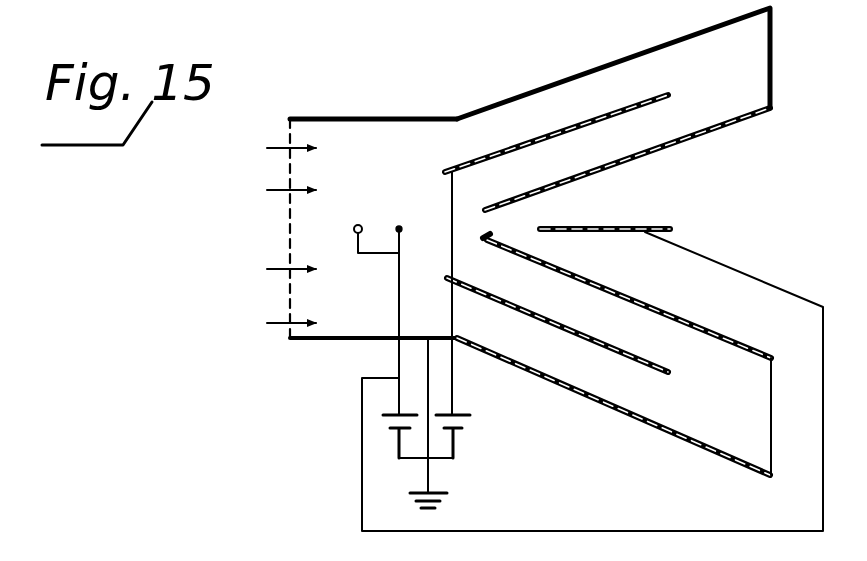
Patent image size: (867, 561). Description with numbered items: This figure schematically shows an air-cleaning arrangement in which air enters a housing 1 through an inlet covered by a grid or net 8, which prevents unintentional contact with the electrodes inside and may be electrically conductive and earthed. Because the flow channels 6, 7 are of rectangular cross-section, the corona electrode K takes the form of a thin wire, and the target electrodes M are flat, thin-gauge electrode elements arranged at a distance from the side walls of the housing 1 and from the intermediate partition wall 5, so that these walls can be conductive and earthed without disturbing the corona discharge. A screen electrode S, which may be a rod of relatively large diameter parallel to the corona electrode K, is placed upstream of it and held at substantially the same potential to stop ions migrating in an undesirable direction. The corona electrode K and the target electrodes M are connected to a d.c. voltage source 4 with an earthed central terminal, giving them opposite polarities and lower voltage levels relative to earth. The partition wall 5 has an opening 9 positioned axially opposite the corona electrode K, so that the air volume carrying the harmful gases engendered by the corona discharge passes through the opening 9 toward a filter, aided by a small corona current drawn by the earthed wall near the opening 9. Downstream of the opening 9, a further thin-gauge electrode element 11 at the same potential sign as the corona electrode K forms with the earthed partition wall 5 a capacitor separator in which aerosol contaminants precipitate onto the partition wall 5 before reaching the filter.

The housing 1 is at (443, 117).
The d.c. voltage source 4 is at (383, 420).
The partition wall 5 is at (656, 152).
The flow channel 6 is at (645, 75).
The flow channel 7 is at (622, 402).
The grid or net 8 is at (288, 224).
The opening 9 is at (487, 236).
The thin-gauge electrode element 11 is at (622, 214).
The target electrode M is at (563, 128).
The screen electrode S is at (354, 229).
The corona electrode K is at (403, 229).